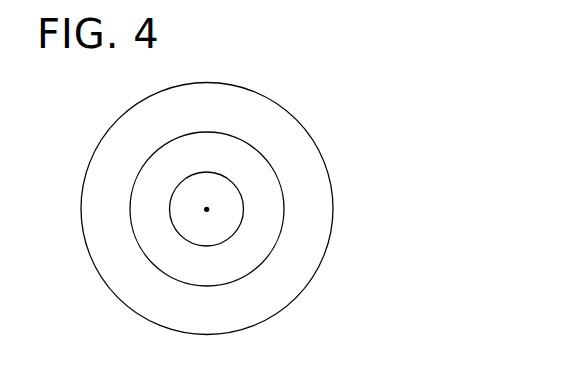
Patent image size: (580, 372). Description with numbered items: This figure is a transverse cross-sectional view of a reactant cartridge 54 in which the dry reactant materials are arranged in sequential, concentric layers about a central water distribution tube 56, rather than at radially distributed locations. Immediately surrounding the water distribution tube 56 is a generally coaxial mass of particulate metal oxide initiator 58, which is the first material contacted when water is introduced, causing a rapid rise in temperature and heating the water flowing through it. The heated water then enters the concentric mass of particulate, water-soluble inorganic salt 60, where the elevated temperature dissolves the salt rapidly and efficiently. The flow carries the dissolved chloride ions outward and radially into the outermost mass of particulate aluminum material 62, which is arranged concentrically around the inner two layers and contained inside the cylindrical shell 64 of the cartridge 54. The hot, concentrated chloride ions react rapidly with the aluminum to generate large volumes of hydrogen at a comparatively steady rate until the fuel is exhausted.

The cartridge 54 is at (92, 123).
The cylindrical shell 64 is at (85, 175).
The particulate aluminum material 62 is at (207, 154).
The particulate, water-soluble inorganic salt 60 is at (207, 209).
The particulate metal oxide initiator 58 is at (227, 192).
The water distribution tube 56 is at (195, 216).